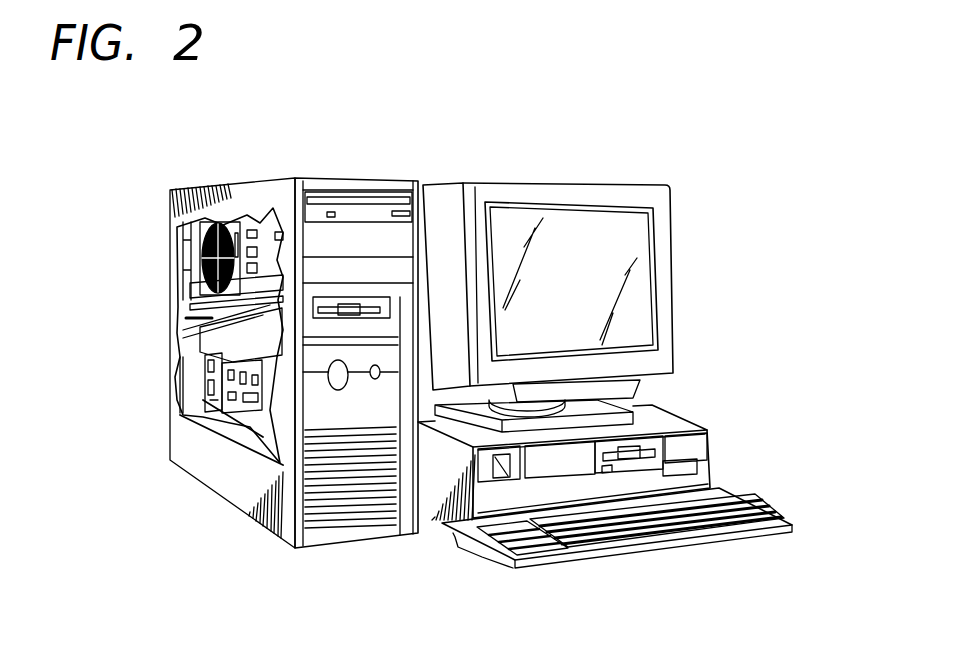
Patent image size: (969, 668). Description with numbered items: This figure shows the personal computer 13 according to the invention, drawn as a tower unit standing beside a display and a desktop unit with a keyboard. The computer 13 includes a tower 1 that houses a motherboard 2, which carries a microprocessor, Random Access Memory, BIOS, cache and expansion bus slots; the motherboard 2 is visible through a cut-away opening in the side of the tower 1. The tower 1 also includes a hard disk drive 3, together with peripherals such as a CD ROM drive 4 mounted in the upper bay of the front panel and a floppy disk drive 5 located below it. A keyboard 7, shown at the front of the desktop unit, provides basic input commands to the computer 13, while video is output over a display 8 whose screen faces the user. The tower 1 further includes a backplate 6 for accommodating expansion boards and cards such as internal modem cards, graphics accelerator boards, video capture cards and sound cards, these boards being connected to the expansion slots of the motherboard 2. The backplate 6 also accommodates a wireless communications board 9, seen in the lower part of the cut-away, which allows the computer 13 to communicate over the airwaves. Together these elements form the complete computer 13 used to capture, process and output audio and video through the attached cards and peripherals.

The tower 1 is at (206, 176).
The motherboard 2 is at (215, 400).
The hard disk drive 3 is at (405, 276).
The CD ROM drive 4 is at (350, 210).
The floppy disk drive 5 is at (200, 340).
The backplate 6 is at (186, 318).
The keyboard 7 is at (740, 532).
The display 8 is at (577, 232).
The wireless communications board 9 is at (240, 378).
The personal computer 13 is at (380, 144).